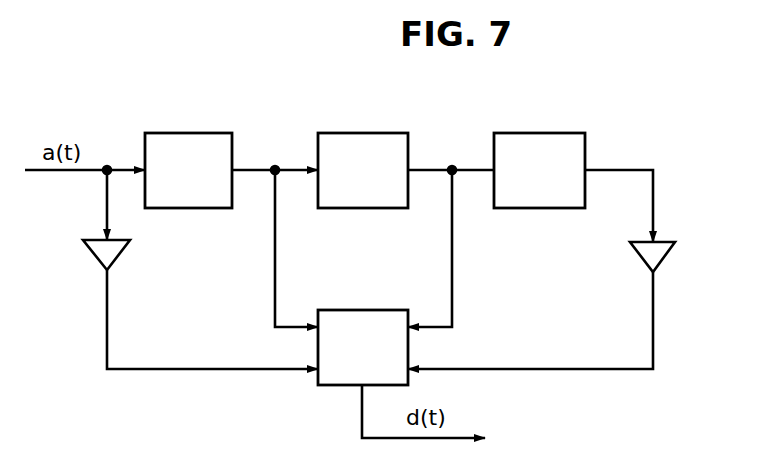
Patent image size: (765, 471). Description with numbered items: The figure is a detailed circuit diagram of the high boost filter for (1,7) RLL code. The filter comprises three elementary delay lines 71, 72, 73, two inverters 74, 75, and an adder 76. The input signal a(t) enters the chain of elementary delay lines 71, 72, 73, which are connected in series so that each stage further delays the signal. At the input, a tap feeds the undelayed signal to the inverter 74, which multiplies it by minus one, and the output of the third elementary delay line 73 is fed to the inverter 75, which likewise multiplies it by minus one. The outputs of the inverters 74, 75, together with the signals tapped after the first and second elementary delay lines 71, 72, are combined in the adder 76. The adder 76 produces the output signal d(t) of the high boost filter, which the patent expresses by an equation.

The elementary delay line 71 is at (183, 133).
The elementary delay line 72 is at (356, 133).
The elementary delay line 73 is at (530, 133).
The inverter 74 is at (117, 257).
The inverter 75 is at (663, 258).
The adder 76 is at (350, 310).